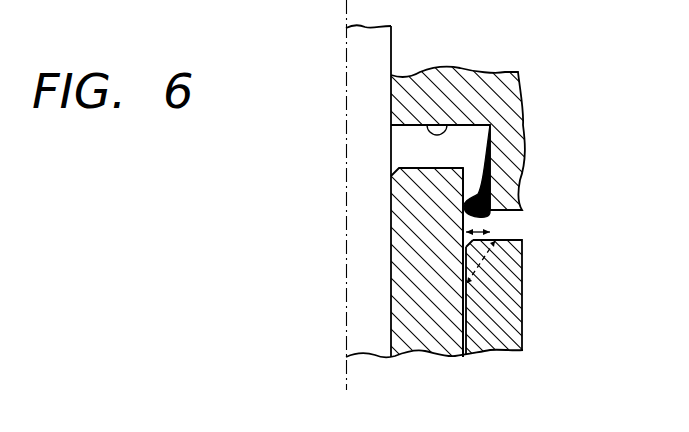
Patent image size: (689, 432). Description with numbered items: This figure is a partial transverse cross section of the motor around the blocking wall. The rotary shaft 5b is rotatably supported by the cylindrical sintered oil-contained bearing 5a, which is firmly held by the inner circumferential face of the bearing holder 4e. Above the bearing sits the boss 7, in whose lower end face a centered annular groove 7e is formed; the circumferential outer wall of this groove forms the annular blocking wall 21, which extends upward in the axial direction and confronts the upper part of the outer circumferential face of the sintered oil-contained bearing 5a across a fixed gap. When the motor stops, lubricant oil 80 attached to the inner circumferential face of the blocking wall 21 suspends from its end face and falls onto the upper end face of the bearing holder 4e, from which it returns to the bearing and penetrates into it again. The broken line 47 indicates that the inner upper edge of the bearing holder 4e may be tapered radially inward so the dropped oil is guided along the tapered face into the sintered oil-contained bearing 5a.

The boss 7 is at (505, 77).
The annular groove 7e is at (427, 125).
The rotary shaft 5b is at (358, 151).
The blocking wall 21 is at (497, 188).
The lubricant oil 80 is at (502, 215).
The broken line 47 is at (478, 265).
The bearing holder 4e is at (510, 333).
The sintered oil-contained bearing 5a is at (445, 352).